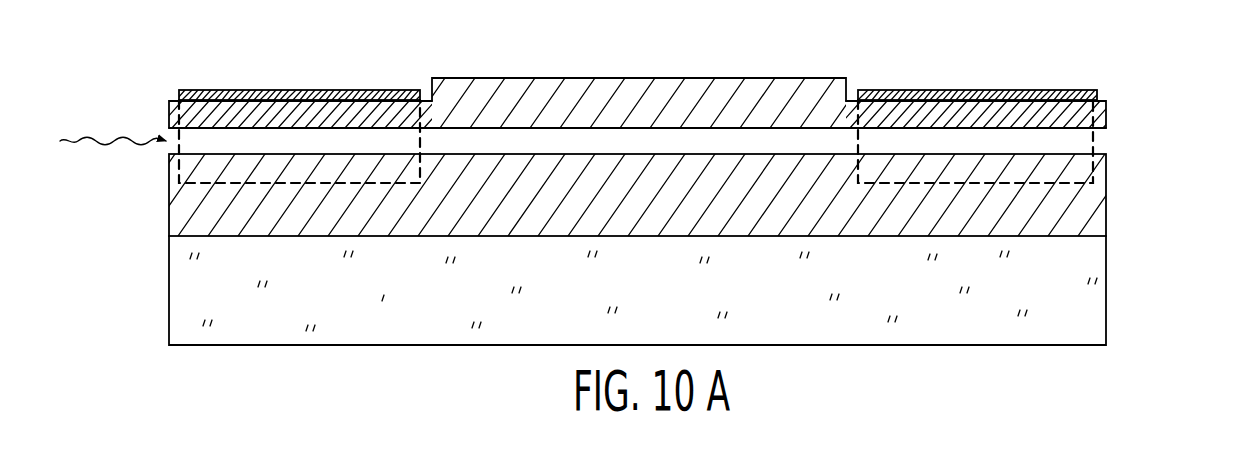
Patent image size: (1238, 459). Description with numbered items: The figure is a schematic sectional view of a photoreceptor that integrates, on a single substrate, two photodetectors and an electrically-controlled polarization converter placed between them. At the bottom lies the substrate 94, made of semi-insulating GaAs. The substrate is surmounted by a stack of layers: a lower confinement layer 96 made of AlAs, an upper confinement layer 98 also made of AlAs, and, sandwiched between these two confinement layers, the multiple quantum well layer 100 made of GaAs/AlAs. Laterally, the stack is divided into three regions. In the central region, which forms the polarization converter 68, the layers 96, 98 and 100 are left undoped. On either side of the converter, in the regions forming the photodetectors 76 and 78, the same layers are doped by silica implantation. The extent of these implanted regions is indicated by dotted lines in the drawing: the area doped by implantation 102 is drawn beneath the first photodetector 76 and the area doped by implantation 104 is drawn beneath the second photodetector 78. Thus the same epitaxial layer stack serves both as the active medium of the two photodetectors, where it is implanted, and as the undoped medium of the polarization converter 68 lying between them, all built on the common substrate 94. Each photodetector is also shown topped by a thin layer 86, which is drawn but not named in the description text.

The polarization converter 68 is at (485, 72).
The photodetector 76 is at (340, 82).
The photodetector 78 is at (1050, 77).
The contact layer 86 is at (267, 91).
The substrate 94 is at (190, 303).
The confinement layer 96 is at (1063, 227).
The confinement layer 98 is at (801, 97).
The multiple quantum well layer 100 is at (658, 140).
The area doped by implantation 102 is at (217, 183).
The area doped by implantation 104 is at (1073, 184).